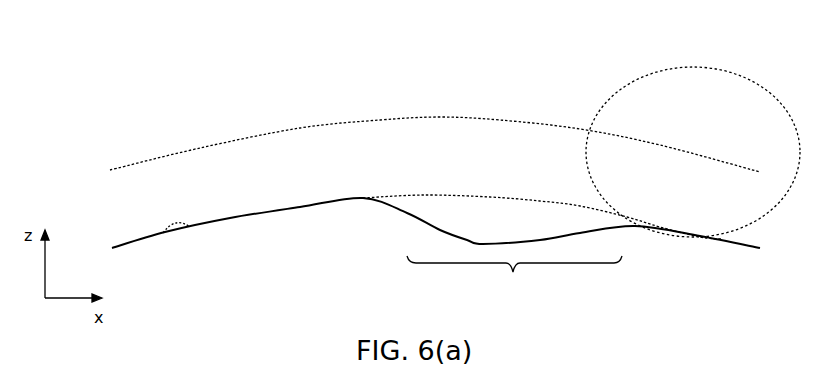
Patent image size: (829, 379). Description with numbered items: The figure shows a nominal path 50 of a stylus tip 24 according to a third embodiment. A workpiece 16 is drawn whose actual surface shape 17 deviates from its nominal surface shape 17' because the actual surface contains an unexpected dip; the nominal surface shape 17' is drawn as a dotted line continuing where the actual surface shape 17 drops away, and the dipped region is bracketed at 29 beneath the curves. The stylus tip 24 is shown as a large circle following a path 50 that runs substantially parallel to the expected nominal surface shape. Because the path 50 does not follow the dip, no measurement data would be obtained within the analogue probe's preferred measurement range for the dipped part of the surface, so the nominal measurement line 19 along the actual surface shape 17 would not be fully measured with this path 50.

The workpiece 16 is at (351, 239).
The actual surface shape 17 is at (346, 264).
The nominal surface shape 17' is at (542, 197).
The nominal measurement line 19 is at (358, 195).
The stylus tip 24 is at (685, 67).
The recess region 29 is at (514, 282).
The path 50 is at (450, 117).